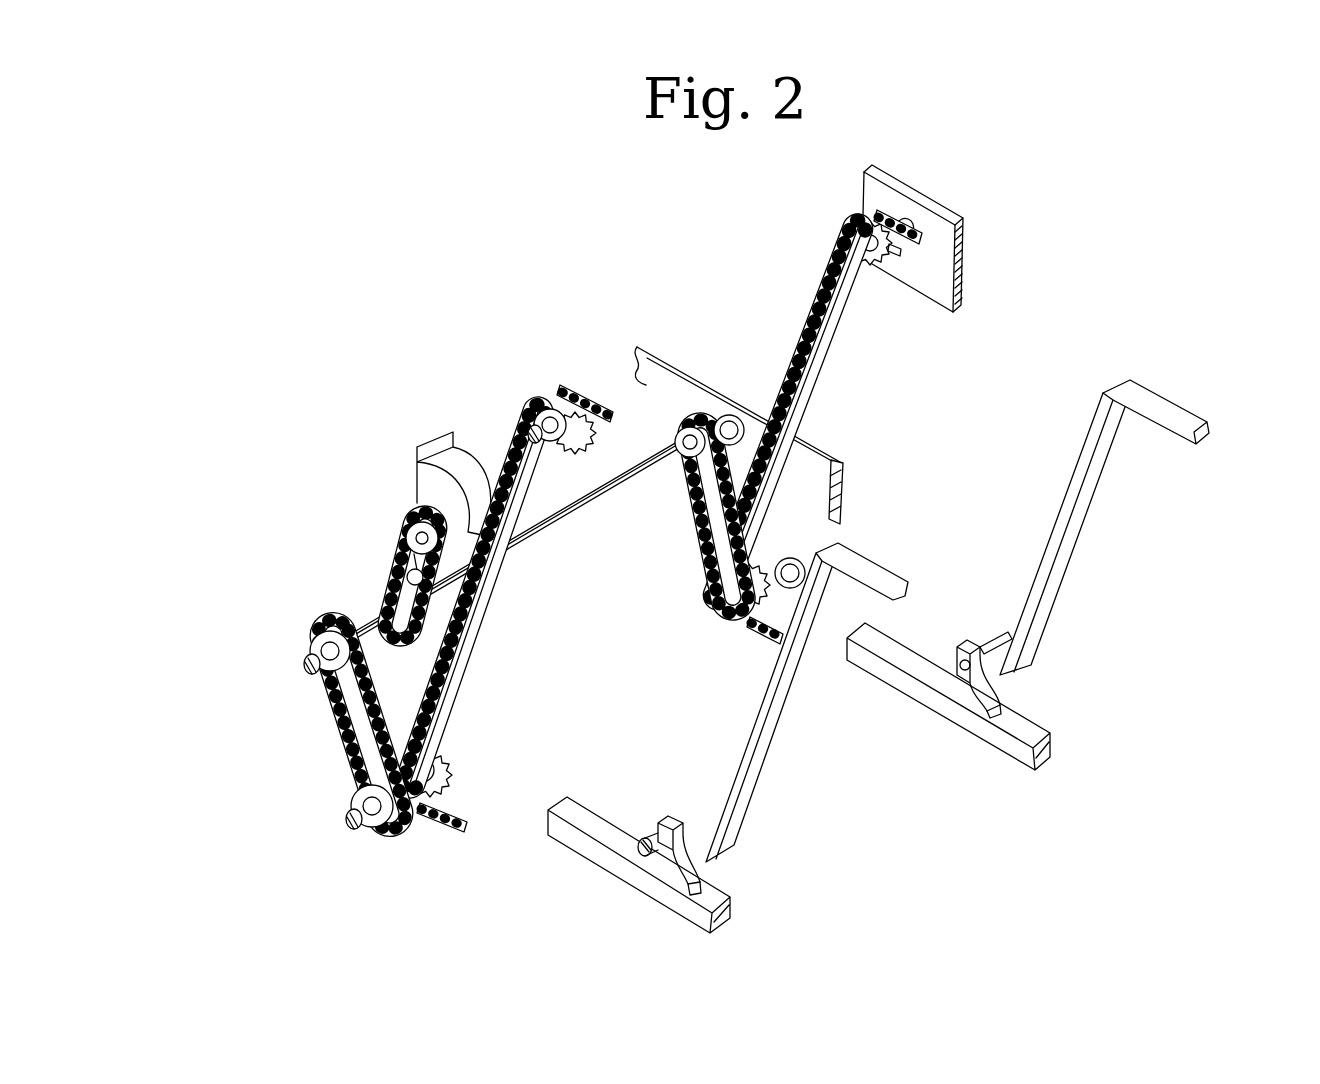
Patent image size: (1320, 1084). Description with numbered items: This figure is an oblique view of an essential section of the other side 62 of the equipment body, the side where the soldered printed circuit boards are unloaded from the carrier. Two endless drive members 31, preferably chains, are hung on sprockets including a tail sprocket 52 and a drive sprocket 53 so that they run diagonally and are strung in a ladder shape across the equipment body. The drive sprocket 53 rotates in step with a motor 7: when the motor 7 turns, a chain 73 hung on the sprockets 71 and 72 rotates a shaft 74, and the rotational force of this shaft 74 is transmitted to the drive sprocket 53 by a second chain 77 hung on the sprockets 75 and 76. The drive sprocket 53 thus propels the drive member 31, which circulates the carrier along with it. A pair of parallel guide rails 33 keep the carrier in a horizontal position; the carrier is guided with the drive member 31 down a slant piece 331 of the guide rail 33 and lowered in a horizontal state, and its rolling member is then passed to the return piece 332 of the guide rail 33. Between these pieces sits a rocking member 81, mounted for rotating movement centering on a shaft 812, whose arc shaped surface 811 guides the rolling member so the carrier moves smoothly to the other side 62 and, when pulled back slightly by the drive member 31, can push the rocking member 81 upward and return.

The motor 7 is at (418, 466).
The drive member 31 is at (462, 623).
The guide rail 33 is at (1177, 412).
The slant piece 331 is at (1070, 483).
The return piece 332 is at (590, 863).
The tail sprocket 52 is at (577, 396).
The drive sprocket 53 is at (430, 768).
The side of the equipment body 62 is at (1078, 358).
The sprocket 71 is at (394, 547).
The sprocket 72 is at (378, 553).
The chain 73 is at (384, 560).
The shaft 74 is at (556, 537).
The sprocket 75 is at (328, 705).
The sprocket 76 is at (343, 767).
The chain 77 is at (338, 735).
The rocking member 81 is at (683, 818).
The arc shaped surface 811 is at (697, 874).
The shaft 812 is at (643, 835).